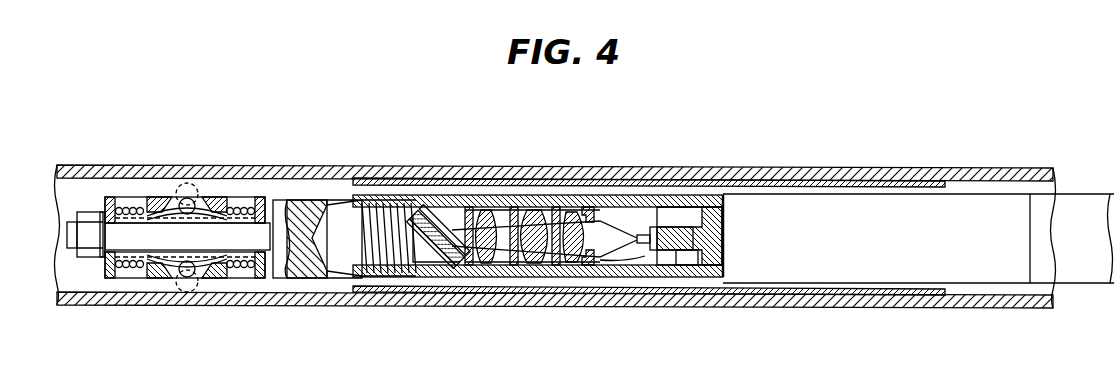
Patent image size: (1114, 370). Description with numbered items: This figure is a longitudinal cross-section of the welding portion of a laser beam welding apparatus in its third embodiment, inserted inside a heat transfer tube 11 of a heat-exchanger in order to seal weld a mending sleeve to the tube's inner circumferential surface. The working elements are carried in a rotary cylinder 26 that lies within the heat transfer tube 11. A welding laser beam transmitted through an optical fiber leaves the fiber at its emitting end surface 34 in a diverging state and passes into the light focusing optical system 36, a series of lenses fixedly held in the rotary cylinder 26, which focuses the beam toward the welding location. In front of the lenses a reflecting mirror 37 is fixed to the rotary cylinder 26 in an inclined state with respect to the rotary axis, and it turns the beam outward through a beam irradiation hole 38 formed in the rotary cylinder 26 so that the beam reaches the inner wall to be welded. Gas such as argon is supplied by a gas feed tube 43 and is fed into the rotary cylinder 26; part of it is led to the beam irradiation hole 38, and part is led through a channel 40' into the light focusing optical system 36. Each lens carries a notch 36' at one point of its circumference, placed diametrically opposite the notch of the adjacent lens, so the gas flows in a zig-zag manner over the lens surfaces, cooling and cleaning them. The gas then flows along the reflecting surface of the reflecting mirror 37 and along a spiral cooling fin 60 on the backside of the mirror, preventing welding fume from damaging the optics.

The heat transfer tube 11 is at (147, 172).
The rotary cylinder 26 is at (312, 280).
The spiral cooling fin 60 is at (352, 232).
The reflecting mirror 37 is at (445, 255).
The beam irradiation hole 38 is at (455, 232).
The light focusing optical system 36 is at (538, 199).
The notch 36' is at (558, 236).
The emitting end surface 34 is at (677, 242).
The gas feed tube 43 is at (710, 220).
The channel 40' is at (706, 301).